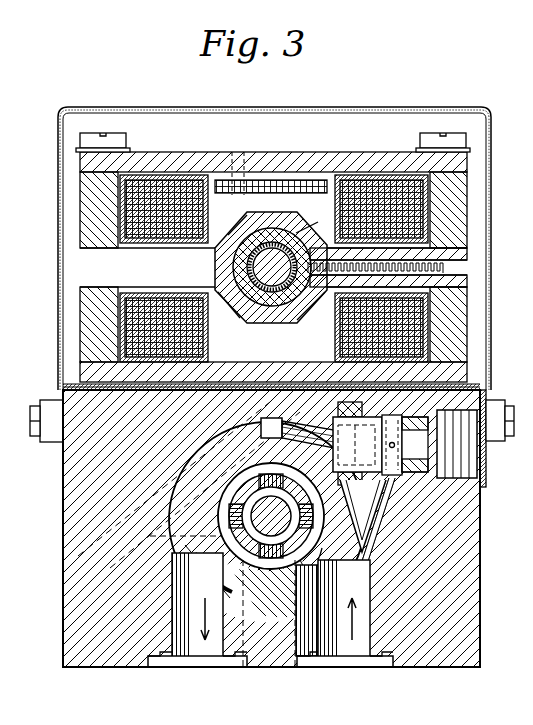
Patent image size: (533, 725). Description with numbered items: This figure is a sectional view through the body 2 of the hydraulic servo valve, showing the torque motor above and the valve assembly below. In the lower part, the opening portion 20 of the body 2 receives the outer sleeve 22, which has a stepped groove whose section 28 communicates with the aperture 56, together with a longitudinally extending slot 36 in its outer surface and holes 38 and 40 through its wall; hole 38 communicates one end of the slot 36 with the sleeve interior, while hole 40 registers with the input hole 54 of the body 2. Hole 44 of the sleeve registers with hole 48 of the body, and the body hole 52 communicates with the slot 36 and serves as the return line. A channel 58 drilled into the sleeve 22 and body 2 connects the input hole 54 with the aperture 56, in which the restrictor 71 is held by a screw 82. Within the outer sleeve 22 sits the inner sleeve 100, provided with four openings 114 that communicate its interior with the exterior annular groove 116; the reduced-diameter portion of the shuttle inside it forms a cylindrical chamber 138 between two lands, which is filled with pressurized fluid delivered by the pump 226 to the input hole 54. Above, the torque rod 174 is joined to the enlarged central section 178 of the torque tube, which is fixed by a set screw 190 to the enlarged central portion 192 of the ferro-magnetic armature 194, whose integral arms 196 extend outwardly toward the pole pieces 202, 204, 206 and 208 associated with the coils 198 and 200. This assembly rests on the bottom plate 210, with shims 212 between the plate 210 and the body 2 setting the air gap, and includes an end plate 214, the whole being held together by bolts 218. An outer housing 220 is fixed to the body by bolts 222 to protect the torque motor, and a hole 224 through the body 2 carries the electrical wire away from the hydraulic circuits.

The body 2 is at (62, 606).
The interconnecting opening portion 20 is at (172, 520).
The outer sleeve 22 is at (172, 481).
The section of stepped groove 28 is at (268, 418).
The longitudinally extending slot 36 is at (190, 562).
The hole 38 is at (150, 536).
The hole 40 is at (345, 574).
The hole 44 is at (288, 667).
The hole 48 is at (250, 667).
The hole (return line) 52 is at (198, 668).
The hole (input hole) 54 is at (356, 668).
The aperture 56 is at (455, 460).
The channel 58 is at (372, 552).
The restrictor 71 is at (408, 474).
The screw 82 is at (498, 404).
The inner sleeve 100 is at (350, 600).
The openings 114 is at (316, 524).
The exterior annular groove 116 is at (340, 548).
The cylindrical chamber 138 is at (258, 500).
The torque rod 174 is at (262, 266).
The enlarged central section of torque tube 178 is at (314, 303).
The set screw 190 is at (322, 230).
The enlarged central portion of armature 192 is at (238, 230).
The armature 194 is at (226, 305).
The arms of armature 196 is at (82, 266).
The coil 198 is at (165, 178).
The coil 200 is at (380, 178).
The pole piece 202 is at (95, 203).
The pole piece 204 is at (92, 315).
The pole piece 206 is at (456, 212).
The pole piece 208 is at (456, 324).
The bottom plate 210 is at (88, 370).
The shims 212 is at (63, 386).
The end plate 214 is at (292, 152).
The bolts 218 is at (98, 132).
The outer housing 220 is at (268, 108).
The bolts 222 is at (40, 442).
The hole 224 is at (78, 537).
The pump 226 is at (258, 566).